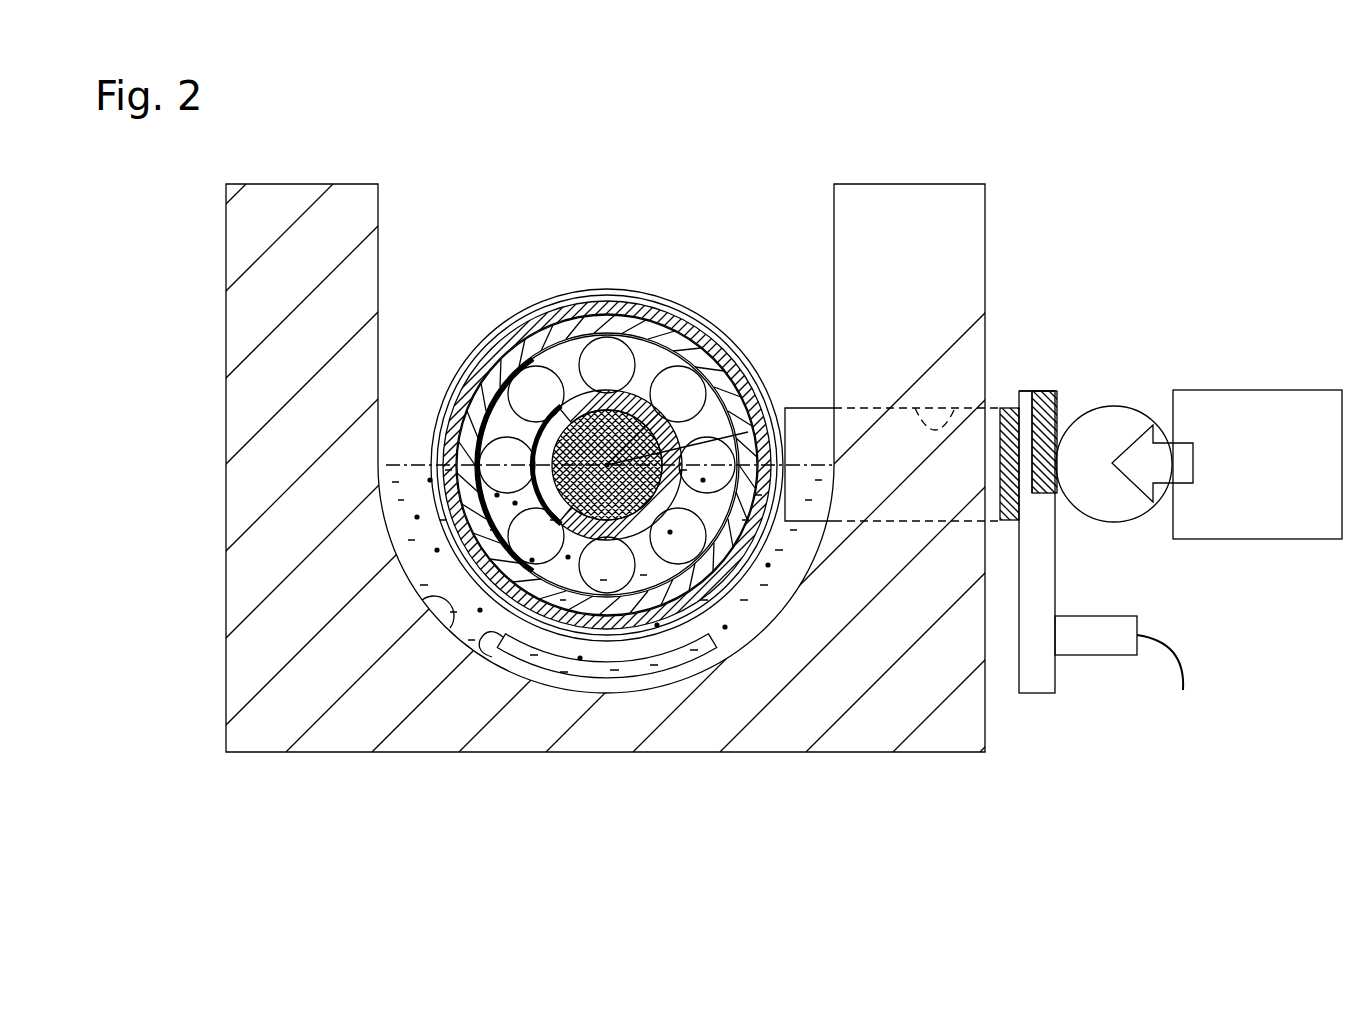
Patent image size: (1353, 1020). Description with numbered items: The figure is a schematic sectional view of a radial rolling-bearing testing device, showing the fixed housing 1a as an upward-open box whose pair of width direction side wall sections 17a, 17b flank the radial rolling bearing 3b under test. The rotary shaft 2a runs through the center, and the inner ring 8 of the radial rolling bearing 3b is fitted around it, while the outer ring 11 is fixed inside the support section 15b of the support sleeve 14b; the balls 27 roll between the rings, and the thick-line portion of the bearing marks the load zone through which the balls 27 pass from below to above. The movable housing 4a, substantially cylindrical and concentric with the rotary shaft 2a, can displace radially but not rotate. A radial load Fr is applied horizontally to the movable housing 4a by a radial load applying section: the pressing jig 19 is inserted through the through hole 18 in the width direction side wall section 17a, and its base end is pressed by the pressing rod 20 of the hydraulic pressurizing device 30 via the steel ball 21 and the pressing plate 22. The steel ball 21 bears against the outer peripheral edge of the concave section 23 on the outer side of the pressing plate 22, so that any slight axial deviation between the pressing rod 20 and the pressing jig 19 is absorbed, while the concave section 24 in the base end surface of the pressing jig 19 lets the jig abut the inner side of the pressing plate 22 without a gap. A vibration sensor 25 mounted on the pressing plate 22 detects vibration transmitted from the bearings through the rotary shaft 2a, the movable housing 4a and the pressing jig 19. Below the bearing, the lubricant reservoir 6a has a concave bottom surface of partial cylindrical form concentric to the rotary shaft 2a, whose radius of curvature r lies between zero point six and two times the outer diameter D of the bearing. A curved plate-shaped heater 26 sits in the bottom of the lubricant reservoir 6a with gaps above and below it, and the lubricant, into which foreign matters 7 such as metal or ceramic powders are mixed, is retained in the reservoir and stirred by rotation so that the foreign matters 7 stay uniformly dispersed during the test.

The fixed housing 1a is at (676, 422).
The width direction side wall section 17a is at (896, 210).
The width direction side wall section 17b is at (300, 210).
The radial rolling bearing 3b is at (605, 501).
The movable housing 4a is at (585, 291).
The support sleeve 14b is at (612, 305).
The inner ring 8 is at (517, 337).
The outer ring 11 is at (705, 360).
The ball 27 is at (679, 388).
The support section 15b is at (482, 443).
The rotary shaft 2a is at (717, 428).
The outer diameter D is at (748, 432).
The foreign matter 7 is at (437, 550).
The heater 26 is at (605, 673).
The radius of curvature r is at (483, 655).
The lubricant reservoir 6a is at (455, 628).
The through hole 18 is at (950, 398).
The pressurizing device 30 is at (1102, 510).
The pressing plate 22 is at (1040, 693).
The pressing jig 19 is at (1032, 392).
The concave section 23 is at (1057, 470).
The concave section 24 is at (1035, 477).
The steel ball 21 is at (1108, 423).
The radial load Fr is at (1185, 438).
The pressing rod 20 is at (1288, 525).
The vibration sensor 25 is at (1117, 647).